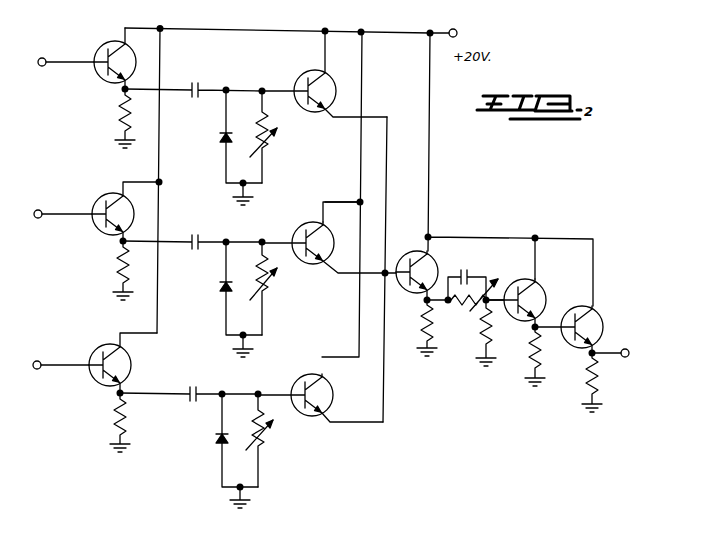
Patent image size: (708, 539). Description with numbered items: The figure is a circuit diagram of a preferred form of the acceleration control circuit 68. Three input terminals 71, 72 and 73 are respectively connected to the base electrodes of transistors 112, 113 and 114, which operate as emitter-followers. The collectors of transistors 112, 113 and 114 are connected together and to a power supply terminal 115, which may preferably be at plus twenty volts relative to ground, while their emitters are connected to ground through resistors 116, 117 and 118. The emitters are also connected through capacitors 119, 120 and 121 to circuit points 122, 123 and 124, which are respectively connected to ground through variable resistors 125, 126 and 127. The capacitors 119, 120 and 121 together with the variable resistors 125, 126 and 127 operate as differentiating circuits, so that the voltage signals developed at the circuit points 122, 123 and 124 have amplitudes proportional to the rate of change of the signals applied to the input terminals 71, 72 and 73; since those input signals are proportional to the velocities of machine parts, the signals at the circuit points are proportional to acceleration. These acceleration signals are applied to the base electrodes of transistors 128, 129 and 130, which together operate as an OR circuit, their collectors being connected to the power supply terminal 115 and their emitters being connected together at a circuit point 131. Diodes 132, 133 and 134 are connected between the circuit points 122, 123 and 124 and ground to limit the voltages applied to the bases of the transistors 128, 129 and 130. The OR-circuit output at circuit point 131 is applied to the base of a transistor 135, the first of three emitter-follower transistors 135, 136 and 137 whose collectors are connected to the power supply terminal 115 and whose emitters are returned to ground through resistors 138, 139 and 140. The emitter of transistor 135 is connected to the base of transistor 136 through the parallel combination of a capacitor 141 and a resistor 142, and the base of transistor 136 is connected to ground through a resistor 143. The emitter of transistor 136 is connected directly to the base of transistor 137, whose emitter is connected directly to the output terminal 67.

The output terminal 67 is at (629, 351).
The acceleration control circuit 68 is at (446, 428).
The input terminal 71 is at (71, 51).
The input terminal 72 is at (38, 219).
The input terminal 73 is at (51, 345).
The transistor 112 is at (100, 79).
The transistor 113 is at (102, 193).
The transistor 114 is at (100, 349).
The power supply terminal 115 is at (458, 35).
The resistor 116 is at (120, 117).
The resistor 117 is at (115, 262).
The resistor 118 is at (112, 414).
The capacitor 119 is at (202, 86).
The capacitor 120 is at (201, 239).
The capacitor 121 is at (182, 398).
The circuit point 122 is at (264, 90).
The circuit point 123 is at (264, 241).
The circuit point 124 is at (261, 393).
The variable resistor 125 is at (266, 147).
The variable resistor 126 is at (263, 298).
The variable resistor 127 is at (263, 449).
The transistor 128 is at (324, 110).
The transistor 129 is at (305, 216).
The transistor 130 is at (330, 403).
The circuit point 131 is at (384, 274).
The diode 132 is at (219, 137).
The diode 133 is at (219, 288).
The diode 134 is at (212, 433).
The transistor 135 is at (426, 253).
The transistor 136 is at (560, 270).
The transistor 137 is at (598, 320).
The resistor 138 is at (432, 321).
The resistor 139 is at (530, 350).
The resistor 140 is at (588, 378).
The capacitor 141 is at (488, 256).
The resistor 142 is at (470, 289).
The resistor 143 is at (481, 345).